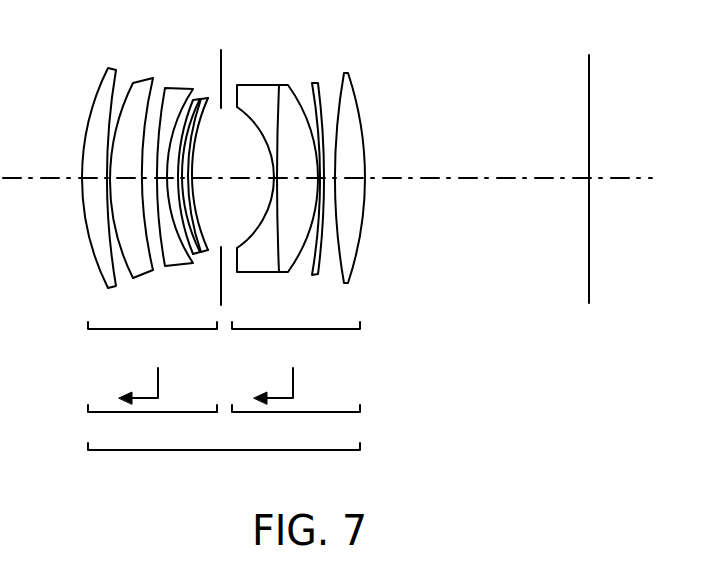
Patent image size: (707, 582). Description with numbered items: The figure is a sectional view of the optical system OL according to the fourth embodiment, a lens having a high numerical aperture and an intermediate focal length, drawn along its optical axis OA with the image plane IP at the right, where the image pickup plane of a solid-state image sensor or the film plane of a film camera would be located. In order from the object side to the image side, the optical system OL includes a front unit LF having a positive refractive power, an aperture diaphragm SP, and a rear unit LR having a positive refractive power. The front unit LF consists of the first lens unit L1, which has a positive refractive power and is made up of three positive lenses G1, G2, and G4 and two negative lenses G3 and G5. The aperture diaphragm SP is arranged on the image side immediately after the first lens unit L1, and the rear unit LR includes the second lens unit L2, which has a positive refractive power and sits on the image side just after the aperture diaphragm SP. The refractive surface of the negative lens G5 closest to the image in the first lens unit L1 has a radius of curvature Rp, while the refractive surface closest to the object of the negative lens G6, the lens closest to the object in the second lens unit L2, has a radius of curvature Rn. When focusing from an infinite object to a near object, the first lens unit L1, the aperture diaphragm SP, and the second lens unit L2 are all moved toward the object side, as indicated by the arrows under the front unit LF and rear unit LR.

The positive lens G1 is at (103, 80).
The positive lens G2 is at (137, 88).
The negative lens G3 is at (173, 97).
The positive lens G4 is at (194, 101).
The negative lens G5 is at (221, 133).
The negative lens G6 is at (287, 157).
The aperture diaphragm SP is at (226, 70).
The radius of curvature Rp is at (197, 146).
The radius of curvature Rn is at (263, 212).
The optical axis OA is at (480, 178).
The image plane IP is at (590, 122).
The first lens unit L1 is at (152, 339).
The second lens unit L2 is at (296, 339).
The front unit LF is at (152, 405).
The rear unit LR is at (296, 405).
The optical system OL is at (224, 461).